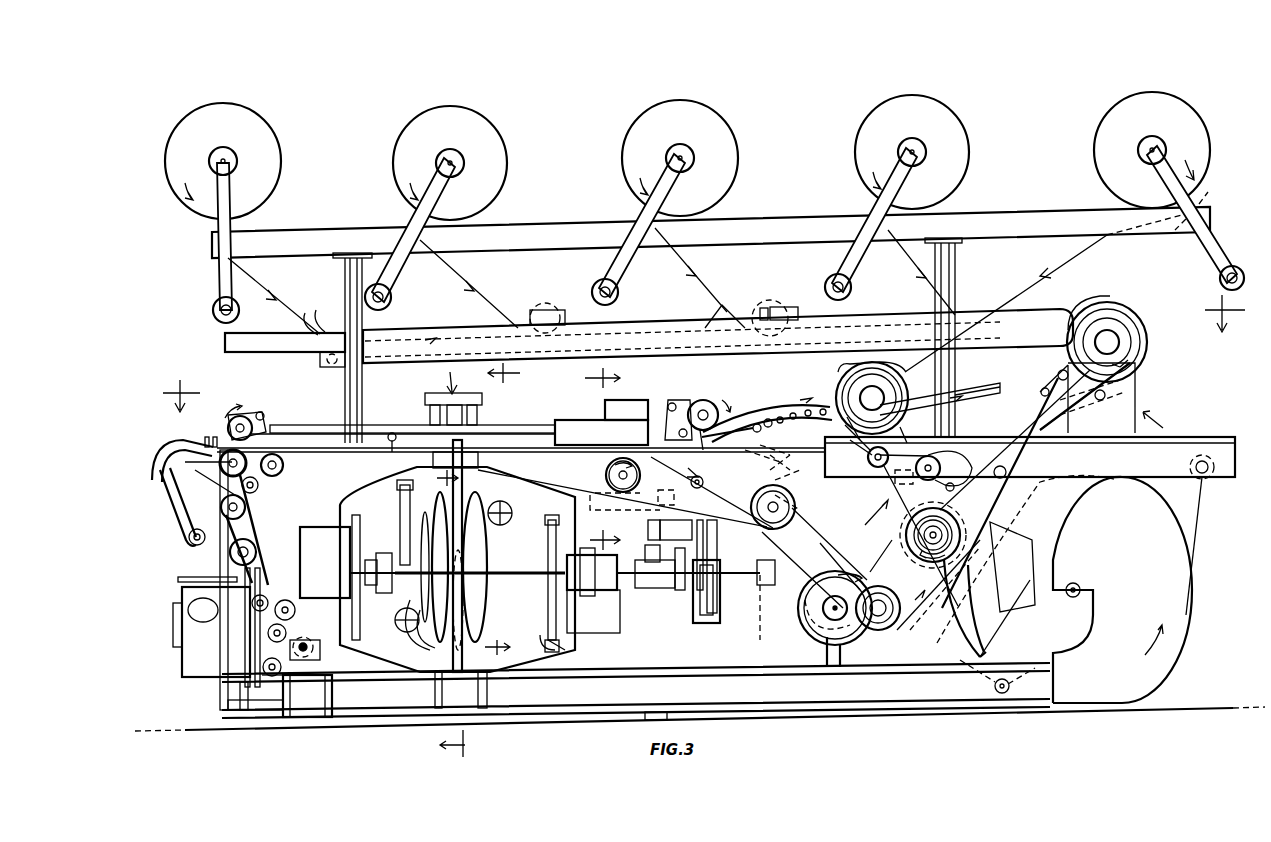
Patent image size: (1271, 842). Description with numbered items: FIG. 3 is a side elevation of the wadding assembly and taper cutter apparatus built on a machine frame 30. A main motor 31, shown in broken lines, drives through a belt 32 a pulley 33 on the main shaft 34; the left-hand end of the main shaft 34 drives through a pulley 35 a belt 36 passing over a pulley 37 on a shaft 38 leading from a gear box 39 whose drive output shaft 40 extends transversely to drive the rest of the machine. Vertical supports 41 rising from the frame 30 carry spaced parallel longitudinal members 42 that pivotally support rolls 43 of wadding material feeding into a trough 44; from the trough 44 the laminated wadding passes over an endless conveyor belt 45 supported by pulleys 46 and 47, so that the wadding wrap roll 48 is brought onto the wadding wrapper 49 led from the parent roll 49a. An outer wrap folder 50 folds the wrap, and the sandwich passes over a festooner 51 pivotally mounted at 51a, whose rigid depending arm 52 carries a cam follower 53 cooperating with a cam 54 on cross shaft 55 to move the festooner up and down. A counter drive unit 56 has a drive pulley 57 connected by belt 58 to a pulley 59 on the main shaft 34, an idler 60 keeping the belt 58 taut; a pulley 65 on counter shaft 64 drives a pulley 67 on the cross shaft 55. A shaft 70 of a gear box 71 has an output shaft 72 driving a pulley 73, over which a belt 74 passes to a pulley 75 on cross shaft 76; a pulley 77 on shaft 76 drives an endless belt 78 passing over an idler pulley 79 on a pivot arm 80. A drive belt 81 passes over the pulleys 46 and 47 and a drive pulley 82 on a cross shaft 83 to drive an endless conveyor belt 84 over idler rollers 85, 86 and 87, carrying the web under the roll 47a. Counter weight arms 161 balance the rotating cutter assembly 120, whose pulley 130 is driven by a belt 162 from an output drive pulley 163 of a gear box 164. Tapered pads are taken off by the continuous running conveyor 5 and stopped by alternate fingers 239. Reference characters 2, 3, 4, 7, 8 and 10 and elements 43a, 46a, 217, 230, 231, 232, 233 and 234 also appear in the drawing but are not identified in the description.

The support rail 2 is at (520, 421).
The control box 3 is at (624, 394).
The section line 4- 4 is at (700, 360).
The continuous running conveyor 5 is at (395, 426).
The section line 7- 7 is at (602, 459).
The section line 8- 8 is at (482, 562).
The gear housing 10 is at (457, 556).
The machine frame 30 is at (1213, 437).
The main motor 31 is at (759, 609).
The belt 32 is at (707, 625).
The pulley 33 is at (720, 608).
The main shaft 34 is at (300, 570).
The pulley 35 is at (247, 586).
The belt 36 is at (247, 628).
The pulley 37 is at (255, 697).
The shaft 38 is at (297, 640).
The gear box 39 is at (325, 667).
The drive output shaft 40 is at (316, 650).
The vertical supports 41 is at (345, 283).
The longitudinal members 42 is at (762, 225).
The rolls of material 43 is at (1095, 155).
The arm 43a is at (1000, 395).
The trough 44 is at (1040, 312).
The endless conveyor belt 45 is at (667, 305).
The pulley 46 is at (1122, 338).
The pulley bracket 46a is at (1112, 318).
The pulley 47 is at (862, 395).
The roll 47a is at (852, 372).
The wadding wrap roll 48 is at (1185, 622).
The wadding wrapper 49 is at (1204, 522).
The wadding wrapper parent roll 49a is at (778, 410).
The outer wrap folder 50 is at (975, 405).
The festooner 51 is at (742, 415).
The pivot mount 51a is at (712, 451).
The rigid depending arm 52 is at (761, 461).
The cam follower 53 is at (786, 463).
The cam 54 is at (799, 479).
The cross shaft 55 is at (799, 506).
The counter drive unit 56 is at (612, 505).
The drive pulley 57 is at (674, 496).
The belt 58 is at (660, 553).
The pulley 59 is at (660, 592).
The idler 60 is at (815, 568).
The counter shaft 64 is at (620, 477).
The pulley 65 is at (609, 469).
The pulley 67 is at (752, 507).
The shaft 70 is at (830, 610).
The gear box 71 is at (845, 575).
The output shaft 72 is at (849, 652).
The pulley 73 is at (880, 632).
The belt 74 is at (938, 589).
The pulley 75 is at (922, 518).
The cross shaft 76 is at (918, 530).
The pulley 77 is at (942, 520).
The endless belt 78 is at (960, 600).
The idler pulley 79 is at (1011, 684).
The pivot arm 80 is at (952, 625).
The drive belt 81 is at (1022, 446).
The drive pulley 82 is at (922, 464).
The cross shaft 83 is at (874, 467).
The endless conveyor belt 84 is at (982, 422).
The idler roller 85 is at (1134, 416).
The idler roller 86 is at (851, 462).
The idler roller 87 is at (926, 476).
The rotating cutter assembly 120 is at (535, 492).
The pulley 130 is at (555, 650).
The counter weight arm 161 is at (408, 520).
The belt 162 is at (567, 646).
The output drive pulley 163 is at (671, 572).
The gear box 164 is at (612, 625).
The roller 217 is at (270, 476).
The roller 230 is at (250, 505).
The roller 231 is at (255, 533).
The roller 232 is at (248, 510).
The block 233 is at (307, 696).
The roller 234 is at (228, 425).
The alternate fingers 239 is at (170, 505).